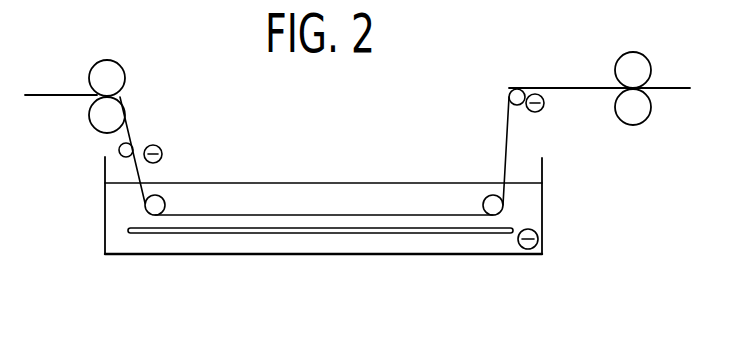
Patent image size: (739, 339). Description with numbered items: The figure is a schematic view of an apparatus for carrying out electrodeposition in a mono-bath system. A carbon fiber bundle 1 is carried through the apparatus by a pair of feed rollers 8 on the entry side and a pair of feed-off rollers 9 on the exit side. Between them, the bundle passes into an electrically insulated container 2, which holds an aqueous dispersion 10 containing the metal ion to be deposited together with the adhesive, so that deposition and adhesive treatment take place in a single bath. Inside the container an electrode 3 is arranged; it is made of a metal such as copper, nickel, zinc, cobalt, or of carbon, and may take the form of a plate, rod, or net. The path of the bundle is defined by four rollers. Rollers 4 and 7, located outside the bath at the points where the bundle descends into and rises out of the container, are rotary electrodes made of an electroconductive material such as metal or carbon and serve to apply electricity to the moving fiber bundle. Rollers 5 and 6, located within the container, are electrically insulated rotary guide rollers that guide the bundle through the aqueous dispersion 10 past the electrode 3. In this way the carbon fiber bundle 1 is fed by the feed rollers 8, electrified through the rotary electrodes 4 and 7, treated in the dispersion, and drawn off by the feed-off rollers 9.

The carbon fiber bundle 1 is at (60, 95).
The electrically insulated container 2 is at (417, 257).
The electrode 3 is at (288, 242).
The roller 4 is at (132, 138).
The roller 5 is at (167, 202).
The roller 6 is at (485, 202).
The roller 7 is at (522, 92).
The feed rollers 8 is at (88, 115).
The feed-off rollers 9 is at (632, 125).
The aqueous dispersion 10 is at (120, 232).